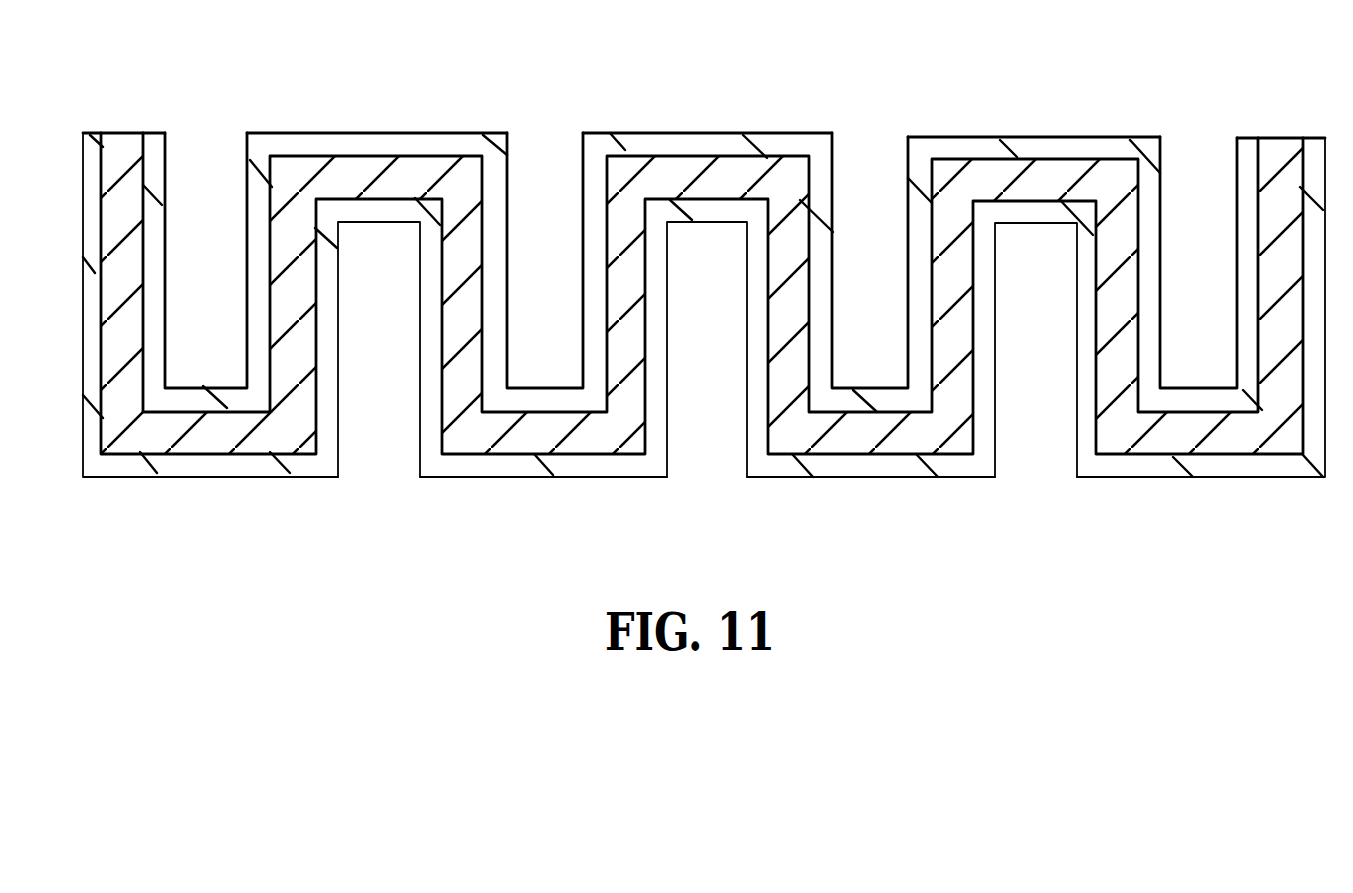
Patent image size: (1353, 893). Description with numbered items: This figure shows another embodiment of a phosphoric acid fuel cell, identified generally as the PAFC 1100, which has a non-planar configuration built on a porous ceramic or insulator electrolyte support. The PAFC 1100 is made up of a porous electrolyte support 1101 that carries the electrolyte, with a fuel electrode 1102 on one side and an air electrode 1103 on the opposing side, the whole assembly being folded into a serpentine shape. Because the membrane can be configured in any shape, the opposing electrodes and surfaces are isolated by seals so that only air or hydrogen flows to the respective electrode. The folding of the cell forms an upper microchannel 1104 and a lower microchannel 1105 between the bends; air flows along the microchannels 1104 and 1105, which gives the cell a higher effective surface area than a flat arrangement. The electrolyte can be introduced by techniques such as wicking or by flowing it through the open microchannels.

The PAFC 1100 is at (704, 282).
The porous electrolyte support 1101 is at (118, 152).
The fuel electrode 1102 is at (704, 348).
The air electrode 1103 is at (704, 209).
The upper microchannel 1104 is at (543, 193).
The lower microchannel 1105 is at (383, 423).